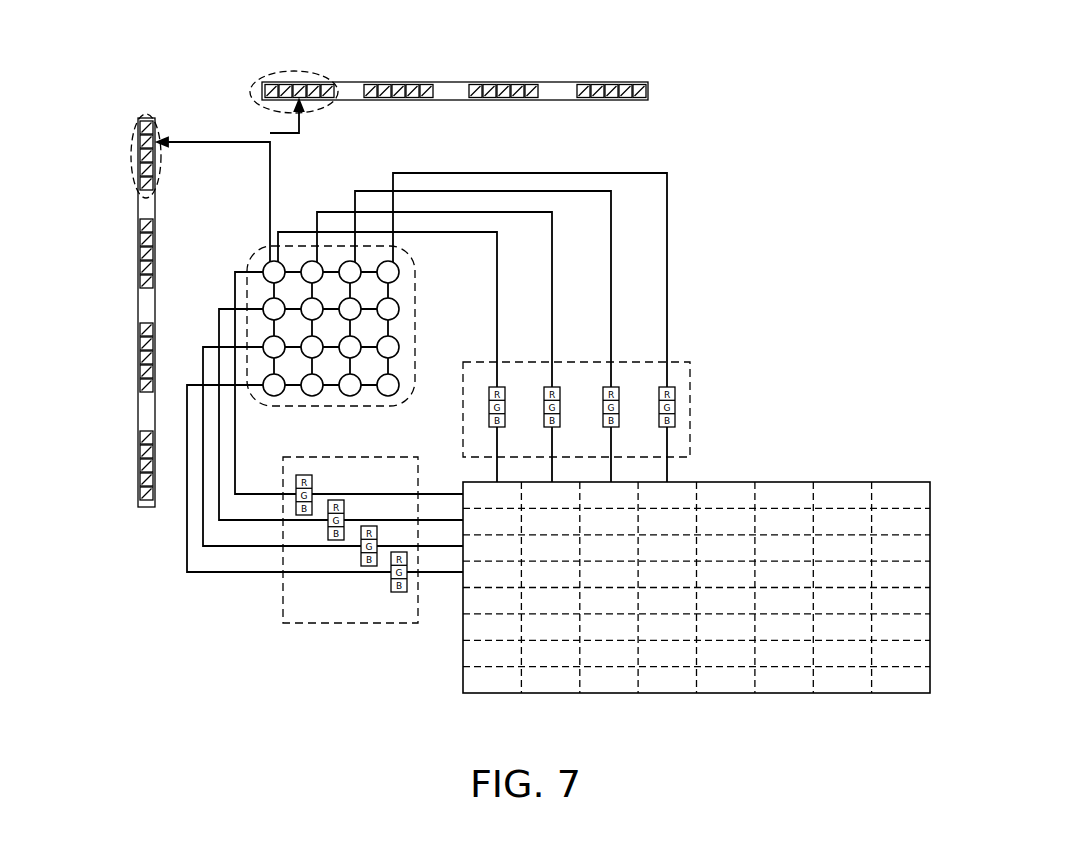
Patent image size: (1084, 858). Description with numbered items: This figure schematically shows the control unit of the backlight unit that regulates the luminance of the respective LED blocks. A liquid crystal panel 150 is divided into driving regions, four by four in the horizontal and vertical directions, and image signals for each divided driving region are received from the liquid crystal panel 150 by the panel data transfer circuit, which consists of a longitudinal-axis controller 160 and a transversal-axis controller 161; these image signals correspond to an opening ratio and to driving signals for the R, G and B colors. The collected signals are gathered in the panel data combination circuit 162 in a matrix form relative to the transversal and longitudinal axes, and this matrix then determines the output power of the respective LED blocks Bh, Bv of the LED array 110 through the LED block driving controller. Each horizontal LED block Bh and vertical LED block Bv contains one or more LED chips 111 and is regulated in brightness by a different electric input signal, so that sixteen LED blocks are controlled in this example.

The LED array 110 is at (560, 86).
The LED chip 111 is at (268, 80).
The horizontal LED block Bh is at (296, 70).
The vertical LED block Bv is at (128, 152).
The liquid crystal panel 150 is at (842, 482).
The longitudinal-axis controller 160 is at (314, 623).
The transversal-axis controller 161 is at (690, 378).
The panel data combination circuit 162 is at (416, 293).